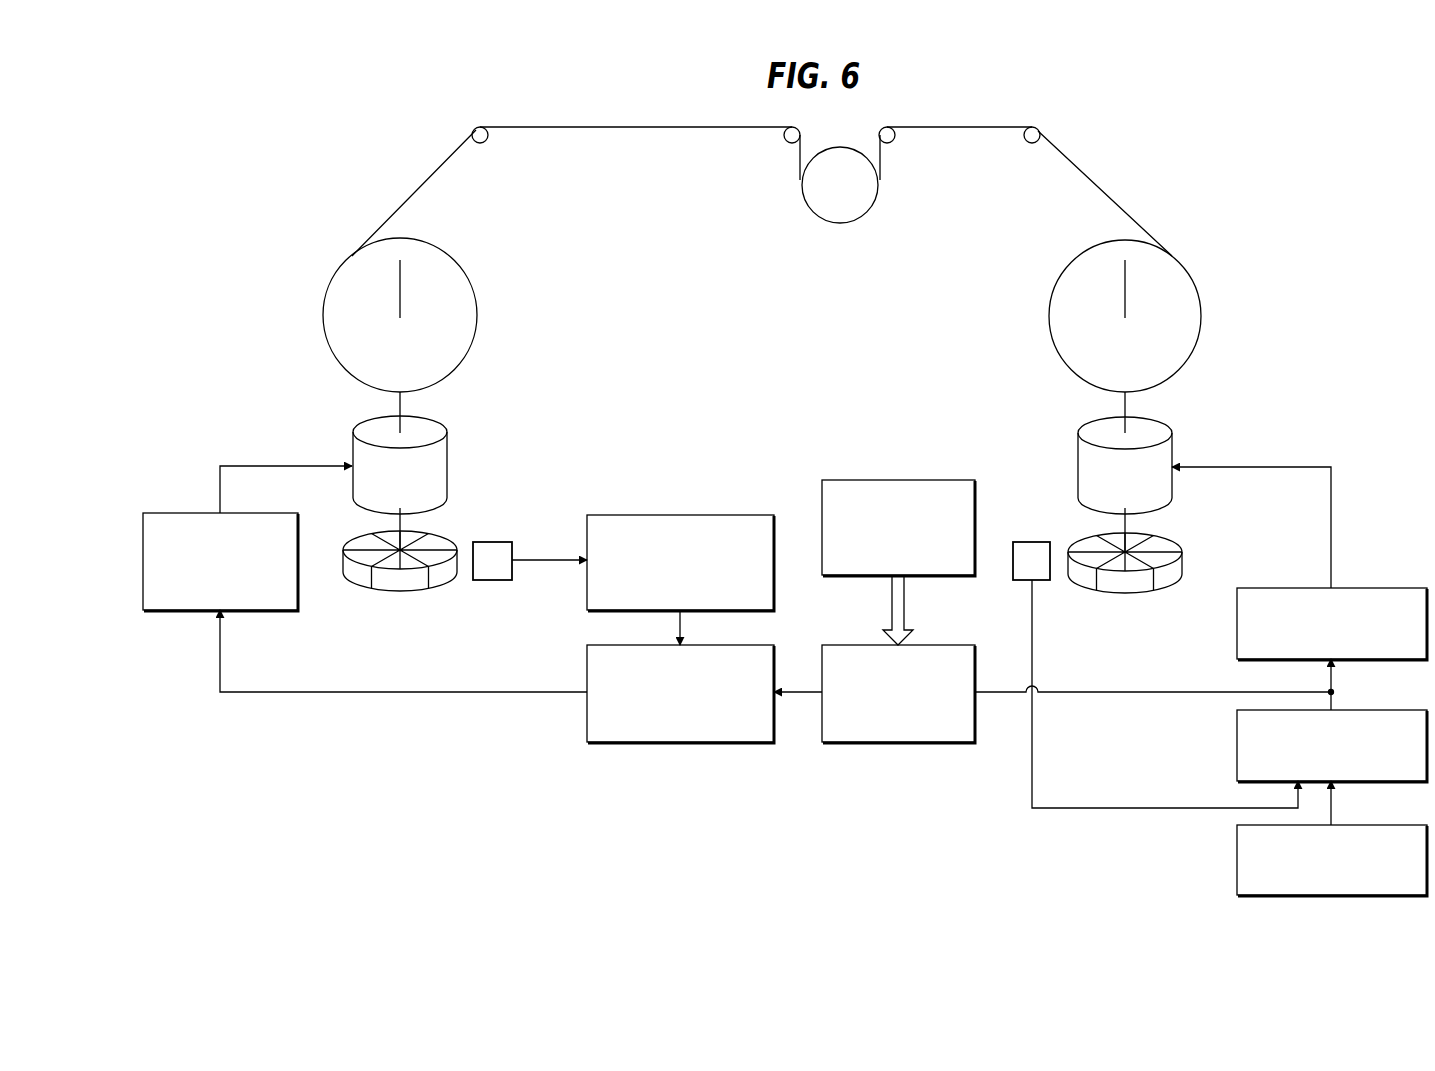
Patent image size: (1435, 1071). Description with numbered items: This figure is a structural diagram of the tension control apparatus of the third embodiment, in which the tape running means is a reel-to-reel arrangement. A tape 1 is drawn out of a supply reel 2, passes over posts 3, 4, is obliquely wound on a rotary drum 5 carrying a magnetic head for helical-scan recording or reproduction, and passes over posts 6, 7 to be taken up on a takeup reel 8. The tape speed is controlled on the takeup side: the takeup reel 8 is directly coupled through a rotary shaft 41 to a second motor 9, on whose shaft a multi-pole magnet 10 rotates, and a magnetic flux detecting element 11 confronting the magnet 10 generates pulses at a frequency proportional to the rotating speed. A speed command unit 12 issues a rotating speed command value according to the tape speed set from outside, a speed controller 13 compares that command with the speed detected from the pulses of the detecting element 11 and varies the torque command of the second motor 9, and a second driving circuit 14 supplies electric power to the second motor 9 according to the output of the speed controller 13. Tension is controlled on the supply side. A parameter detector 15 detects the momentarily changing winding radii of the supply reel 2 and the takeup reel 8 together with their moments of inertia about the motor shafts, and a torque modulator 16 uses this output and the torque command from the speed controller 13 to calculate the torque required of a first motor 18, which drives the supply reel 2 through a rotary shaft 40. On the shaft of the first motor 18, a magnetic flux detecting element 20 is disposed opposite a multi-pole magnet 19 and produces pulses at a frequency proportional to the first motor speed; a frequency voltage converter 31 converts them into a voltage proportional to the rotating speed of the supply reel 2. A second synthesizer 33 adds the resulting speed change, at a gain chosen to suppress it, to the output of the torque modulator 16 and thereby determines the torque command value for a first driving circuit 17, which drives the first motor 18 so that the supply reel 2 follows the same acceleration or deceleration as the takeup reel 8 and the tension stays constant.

The tape 1 is at (549, 127).
The supply reel 2 is at (477, 290).
The post 3 is at (488, 141).
The post 4 is at (785, 141).
The rotary drum 5 is at (861, 207).
The post 6 is at (895, 141).
The post 7 is at (1025, 141).
The takeup reel 8 is at (1050, 291).
The second motor 9 is at (1077, 463).
The magnet 10 is at (1177, 542).
The magnetic flux detecting element 11 is at (1044, 580).
The speed command unit 12 is at (1237, 847).
The speed controller 13 is at (1237, 747).
The second driving circuit 14 is at (1237, 635).
The parameter detector 15 is at (919, 480).
The torque modulator 16 is at (836, 645).
The first driving circuit 17 is at (177, 513).
The first motor 18 is at (448, 446).
The magnet 19 is at (355, 578).
The magnetic flux detecting element 20 is at (487, 542).
The frequency voltage converter 31 is at (735, 515).
The second synthesizer 33 is at (587, 672).
The reel shaft 40 is at (398, 396).
The reel shaft 41 is at (1123, 396).